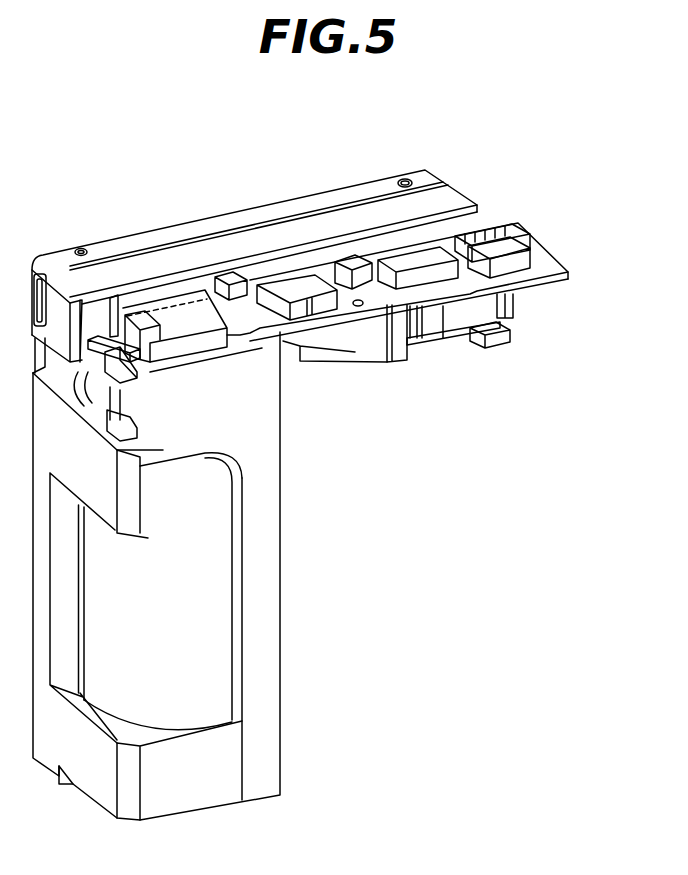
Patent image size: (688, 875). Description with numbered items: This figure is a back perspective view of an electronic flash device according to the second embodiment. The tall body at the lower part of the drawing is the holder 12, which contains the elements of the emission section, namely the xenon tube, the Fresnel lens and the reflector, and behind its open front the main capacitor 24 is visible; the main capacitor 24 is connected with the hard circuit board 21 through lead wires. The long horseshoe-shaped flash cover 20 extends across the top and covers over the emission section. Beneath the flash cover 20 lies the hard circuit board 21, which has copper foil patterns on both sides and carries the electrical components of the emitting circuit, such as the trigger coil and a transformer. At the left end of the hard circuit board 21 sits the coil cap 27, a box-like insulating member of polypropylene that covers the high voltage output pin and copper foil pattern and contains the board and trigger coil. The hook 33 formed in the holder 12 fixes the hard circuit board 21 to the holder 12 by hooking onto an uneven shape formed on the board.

The holder 12 is at (263, 541).
The flash cover 20 is at (290, 208).
The hard circuit board 21 is at (547, 257).
The main capacitor 24 is at (200, 680).
The coil cap 27 is at (172, 292).
The hook 33 is at (120, 330).